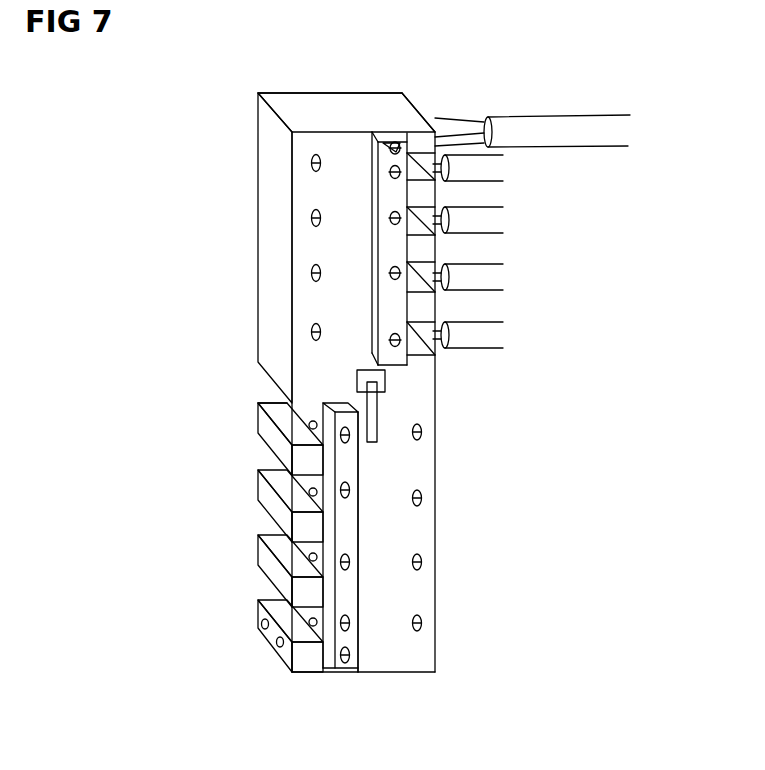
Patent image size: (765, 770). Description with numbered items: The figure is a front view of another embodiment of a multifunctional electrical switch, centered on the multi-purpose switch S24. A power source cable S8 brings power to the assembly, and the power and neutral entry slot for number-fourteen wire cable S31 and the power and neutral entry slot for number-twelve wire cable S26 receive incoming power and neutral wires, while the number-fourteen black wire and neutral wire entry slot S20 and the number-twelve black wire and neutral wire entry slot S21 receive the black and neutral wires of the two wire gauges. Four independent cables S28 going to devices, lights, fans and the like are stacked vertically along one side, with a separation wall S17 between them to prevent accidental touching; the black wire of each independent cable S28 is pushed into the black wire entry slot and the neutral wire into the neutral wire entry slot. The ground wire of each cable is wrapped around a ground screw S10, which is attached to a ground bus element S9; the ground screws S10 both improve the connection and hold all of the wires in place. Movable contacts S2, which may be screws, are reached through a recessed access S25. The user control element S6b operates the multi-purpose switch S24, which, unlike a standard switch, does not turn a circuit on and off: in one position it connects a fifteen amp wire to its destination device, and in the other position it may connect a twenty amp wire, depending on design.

The multi-purpose switch S24 is at (293, 108).
The power and neutral entry slot for #14 wire cable S31 is at (412, 105).
The #14 black wire and neutral wire entry slot S20 is at (420, 338).
The cables going to devices, lights, fans, and the like S28 is at (493, 335).
The power source cable S8 is at (585, 158).
The user control element for the multi-purpose switch S6b is at (380, 377).
The ground screws S10 is at (348, 488).
The ground bus element S9 is at (347, 516).
The recessed access to movable contacts S25 is at (424, 568).
The movable contacts S2 is at (501, 650).
The #12 black wire and neutral wire entry slot S21 is at (293, 627).
The separation wall S17 is at (250, 411).
The power and neutral entry slot for #12 wire cable S26 is at (277, 646).